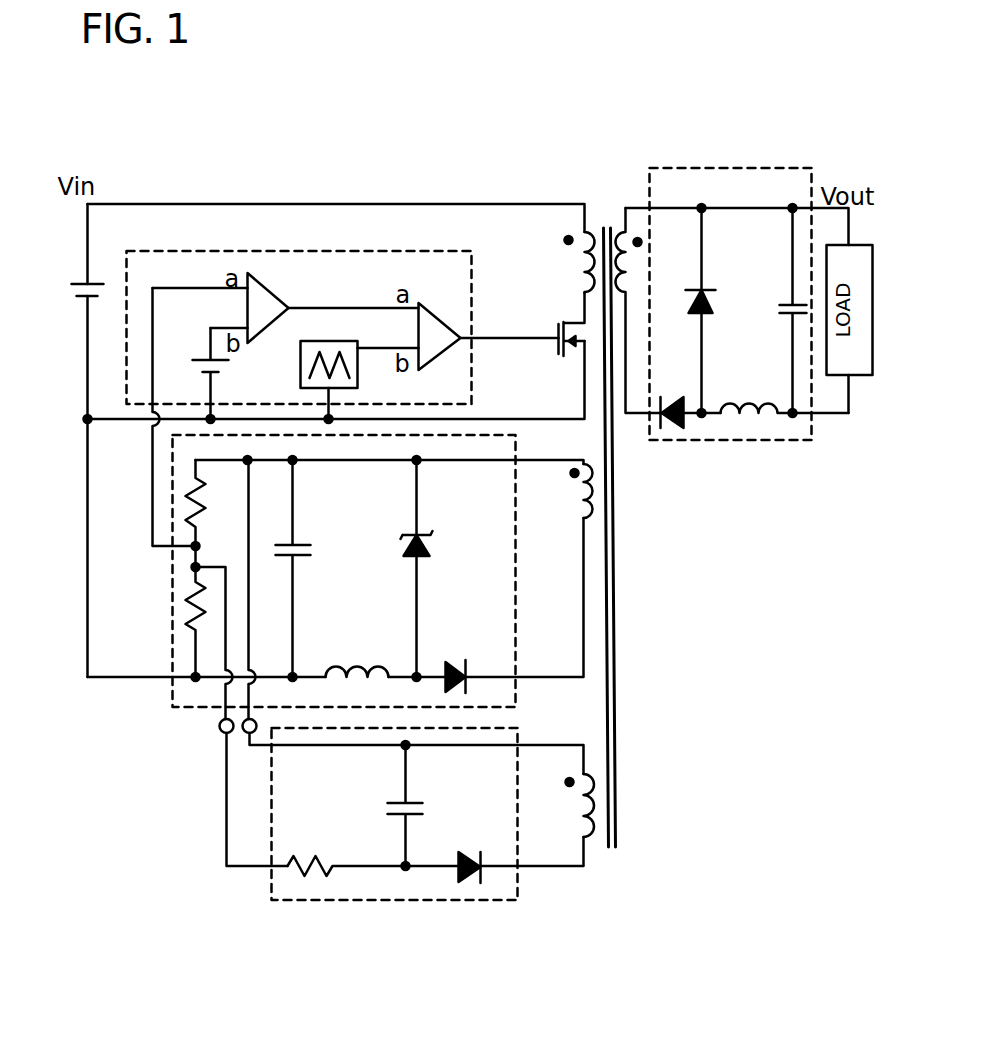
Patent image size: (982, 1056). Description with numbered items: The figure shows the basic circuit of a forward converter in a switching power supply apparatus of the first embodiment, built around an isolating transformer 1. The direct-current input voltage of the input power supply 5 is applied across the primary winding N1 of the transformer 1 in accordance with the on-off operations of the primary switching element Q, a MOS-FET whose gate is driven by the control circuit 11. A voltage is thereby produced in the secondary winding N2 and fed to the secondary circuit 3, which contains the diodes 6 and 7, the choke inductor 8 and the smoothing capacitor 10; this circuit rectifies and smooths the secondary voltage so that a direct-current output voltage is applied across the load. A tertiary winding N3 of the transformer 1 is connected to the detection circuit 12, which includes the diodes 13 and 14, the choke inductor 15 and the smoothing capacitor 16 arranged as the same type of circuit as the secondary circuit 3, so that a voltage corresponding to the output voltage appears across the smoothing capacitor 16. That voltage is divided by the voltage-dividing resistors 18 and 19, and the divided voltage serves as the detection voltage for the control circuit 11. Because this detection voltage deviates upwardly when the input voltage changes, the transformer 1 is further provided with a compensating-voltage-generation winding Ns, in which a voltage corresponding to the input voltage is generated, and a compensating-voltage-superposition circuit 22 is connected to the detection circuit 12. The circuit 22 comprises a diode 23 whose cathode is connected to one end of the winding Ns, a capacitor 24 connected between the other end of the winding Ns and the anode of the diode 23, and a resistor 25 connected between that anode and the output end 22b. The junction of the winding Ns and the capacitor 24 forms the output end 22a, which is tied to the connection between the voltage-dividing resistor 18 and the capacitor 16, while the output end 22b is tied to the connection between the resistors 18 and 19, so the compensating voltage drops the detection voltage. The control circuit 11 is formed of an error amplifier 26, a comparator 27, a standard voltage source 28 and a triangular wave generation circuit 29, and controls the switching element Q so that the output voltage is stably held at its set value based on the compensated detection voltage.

The transformer 1 is at (605, 220).
The secondary circuit 3 is at (695, 168).
The input power supply 5 is at (76, 284).
The diode 6 is at (679, 400).
The diode 7 is at (707, 300).
The choke inductor 8 is at (740, 398).
The smoothing capacitor 10 is at (787, 305).
The control circuit 11 is at (300, 251).
The detection circuit 12 is at (172, 645).
The diode 13 is at (430, 540).
The diode 14 is at (450, 660).
The choke inductor 15 is at (357, 663).
The smoothing capacitor 16 is at (312, 548).
The voltage-dividing resistor 18 is at (190, 508).
The voltage-dividing resistor 19 is at (190, 598).
The compensating-voltage-superposition circuit 22 is at (271, 892).
The output end 22a is at (246, 735).
The output end 22b is at (218, 735).
The diode 23 is at (467, 857).
The capacitor 24 is at (385, 805).
The resistor 25 is at (290, 863).
The error amplifier 26 is at (265, 287).
The comparator 27 is at (418, 303).
The standard voltage source 28 is at (192, 362).
The triangular wave generation circuit 29 is at (300, 384).
The primary switching element Q is at (556, 355).
The primary winding N1 is at (593, 268).
The secondary winding N2 is at (656, 310).
The tertiary winding N3 is at (590, 493).
The compensating-voltage-generation winding Ns is at (597, 798).